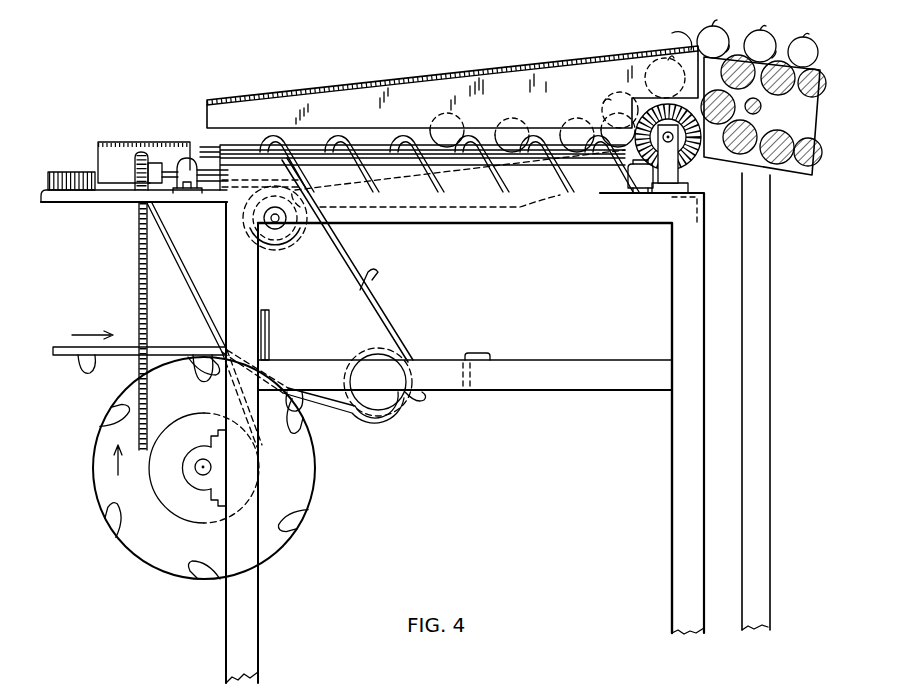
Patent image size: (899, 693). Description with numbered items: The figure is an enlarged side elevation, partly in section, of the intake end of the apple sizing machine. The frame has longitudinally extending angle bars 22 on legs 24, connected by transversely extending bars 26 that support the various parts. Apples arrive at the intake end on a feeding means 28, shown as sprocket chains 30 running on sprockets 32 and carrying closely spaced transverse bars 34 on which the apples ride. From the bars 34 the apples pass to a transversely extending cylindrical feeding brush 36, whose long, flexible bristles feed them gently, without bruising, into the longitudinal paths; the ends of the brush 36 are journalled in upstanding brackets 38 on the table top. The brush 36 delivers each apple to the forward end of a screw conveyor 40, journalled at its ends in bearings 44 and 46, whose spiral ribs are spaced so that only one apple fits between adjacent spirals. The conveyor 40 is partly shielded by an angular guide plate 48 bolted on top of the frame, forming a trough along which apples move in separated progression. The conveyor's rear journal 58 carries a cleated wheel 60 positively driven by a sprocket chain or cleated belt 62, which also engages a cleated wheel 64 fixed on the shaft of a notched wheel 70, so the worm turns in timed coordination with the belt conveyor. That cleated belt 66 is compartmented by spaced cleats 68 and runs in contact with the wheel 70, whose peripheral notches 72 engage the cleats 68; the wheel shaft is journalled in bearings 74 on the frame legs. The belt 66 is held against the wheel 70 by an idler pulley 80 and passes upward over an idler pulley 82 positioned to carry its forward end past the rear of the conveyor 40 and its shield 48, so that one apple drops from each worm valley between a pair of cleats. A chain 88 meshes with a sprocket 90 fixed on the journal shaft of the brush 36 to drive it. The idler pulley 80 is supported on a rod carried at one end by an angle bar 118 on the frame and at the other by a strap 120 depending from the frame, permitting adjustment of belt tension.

The angle bars 22 is at (556, 226).
The legs 24 is at (250, 626).
The transversely extending bars 26 is at (700, 212).
The feeding means 28 is at (797, 226).
The sprocket chains 30 is at (800, 163).
The sprockets 32 is at (757, 90).
The bars 34 is at (752, 165).
The feeding brush 36 is at (682, 162).
The brackets 38 is at (665, 188).
The screw conveyor 40 is at (477, 180).
The bearing 44 is at (642, 195).
The bearing 46 is at (192, 188).
The guide plate 48 is at (468, 88).
The rear journal 58 is at (171, 166).
The cleated wheel 60 is at (135, 163).
The cleated belt 62 is at (138, 258).
The cleated wheel 64 is at (195, 512).
The cleated belt 66 is at (374, 308).
The cleats 68 is at (84, 366).
The wheel 70 is at (309, 488).
The peripheral notches 72 is at (305, 515).
The bearings 74 is at (196, 476).
The idler pulley 80 is at (390, 400).
The idler pulley 82 is at (282, 243).
The chain 88 is at (340, 226).
The sprocket 90 is at (622, 97).
The angle bar 118 is at (483, 352).
The strap 120 is at (269, 340).